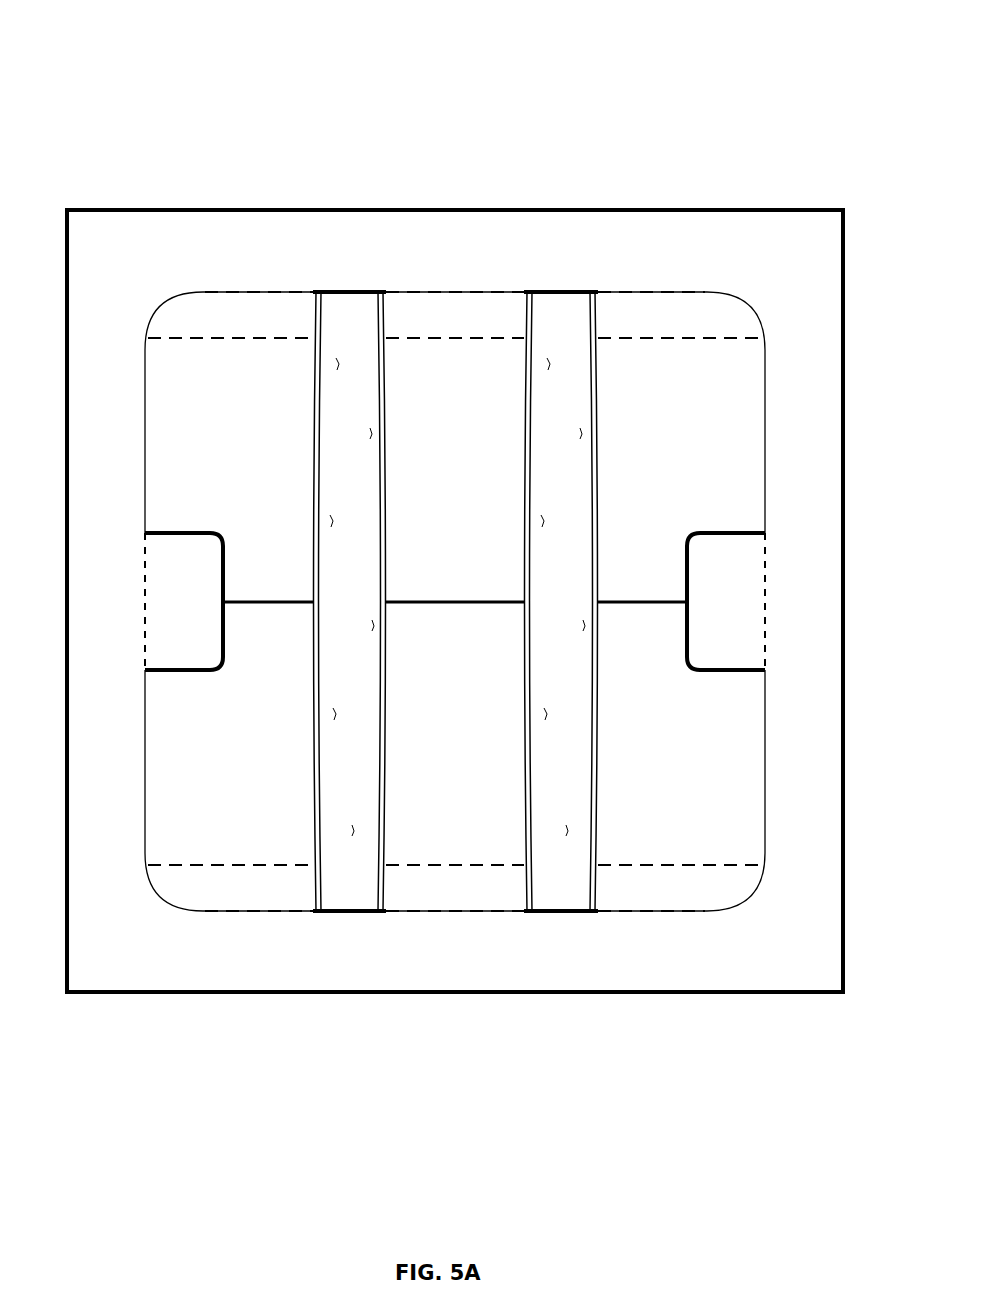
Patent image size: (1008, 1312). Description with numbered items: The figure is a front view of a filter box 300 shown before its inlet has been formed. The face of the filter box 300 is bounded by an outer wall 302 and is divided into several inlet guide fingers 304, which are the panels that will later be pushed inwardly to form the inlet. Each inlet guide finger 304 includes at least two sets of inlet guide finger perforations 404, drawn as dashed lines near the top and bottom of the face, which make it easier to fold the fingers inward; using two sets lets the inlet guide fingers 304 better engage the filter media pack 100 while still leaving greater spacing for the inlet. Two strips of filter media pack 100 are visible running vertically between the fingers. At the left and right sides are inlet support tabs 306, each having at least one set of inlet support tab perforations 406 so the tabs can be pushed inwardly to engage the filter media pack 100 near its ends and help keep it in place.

The filter box 300 is at (128, 42).
The housing 302 is at (101, 210).
The inlet guide fingers 304 is at (212, 408).
The inlet guide finger perforations 404 is at (278, 338).
The filter media pack 100 is at (352, 868).
The inlet support tabs 306 is at (170, 592).
The inlet support tab perforations 406 is at (145, 598).